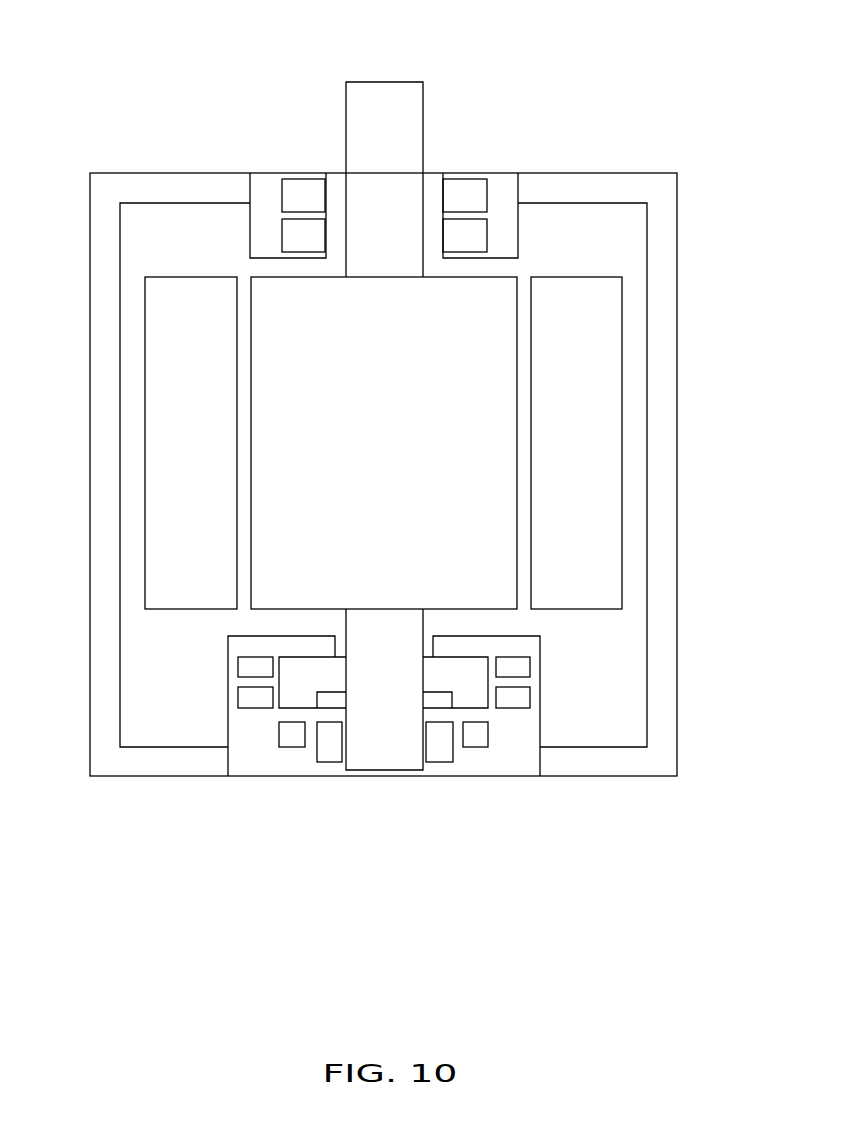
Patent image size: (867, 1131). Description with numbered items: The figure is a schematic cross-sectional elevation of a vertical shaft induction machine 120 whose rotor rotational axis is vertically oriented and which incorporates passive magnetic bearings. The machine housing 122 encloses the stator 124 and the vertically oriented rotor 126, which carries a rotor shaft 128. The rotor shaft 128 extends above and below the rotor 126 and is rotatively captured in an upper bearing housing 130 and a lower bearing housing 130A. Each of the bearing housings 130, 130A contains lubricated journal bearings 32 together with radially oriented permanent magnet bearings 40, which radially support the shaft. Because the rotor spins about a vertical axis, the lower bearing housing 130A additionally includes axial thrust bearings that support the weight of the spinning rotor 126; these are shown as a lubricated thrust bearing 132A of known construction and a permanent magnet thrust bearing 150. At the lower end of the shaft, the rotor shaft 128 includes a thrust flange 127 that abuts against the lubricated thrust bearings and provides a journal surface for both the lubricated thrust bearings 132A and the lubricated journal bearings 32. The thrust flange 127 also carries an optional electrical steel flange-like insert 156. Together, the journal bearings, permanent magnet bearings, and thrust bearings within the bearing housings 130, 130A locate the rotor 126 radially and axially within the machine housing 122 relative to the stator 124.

The vertical shaft induction machine 120 is at (205, 852).
The machine housing 122 is at (680, 728).
The stator 124 is at (660, 398).
The rotor 126 is at (566, 250).
The thrust flange 127 is at (458, 678).
The rotor shaft 128 is at (370, 97).
The bearing housing 130 is at (497, 183).
The bearing housing 130A is at (647, 777).
The lubricated thrust bearing 132A is at (290, 745).
The permanent magnet thrust bearing 150 is at (330, 758).
The electrical steel flange-like insert 156 is at (437, 700).
The lubricated journal bearing 32 is at (293, 238).
The permanent magnet bearing 40 is at (297, 193).